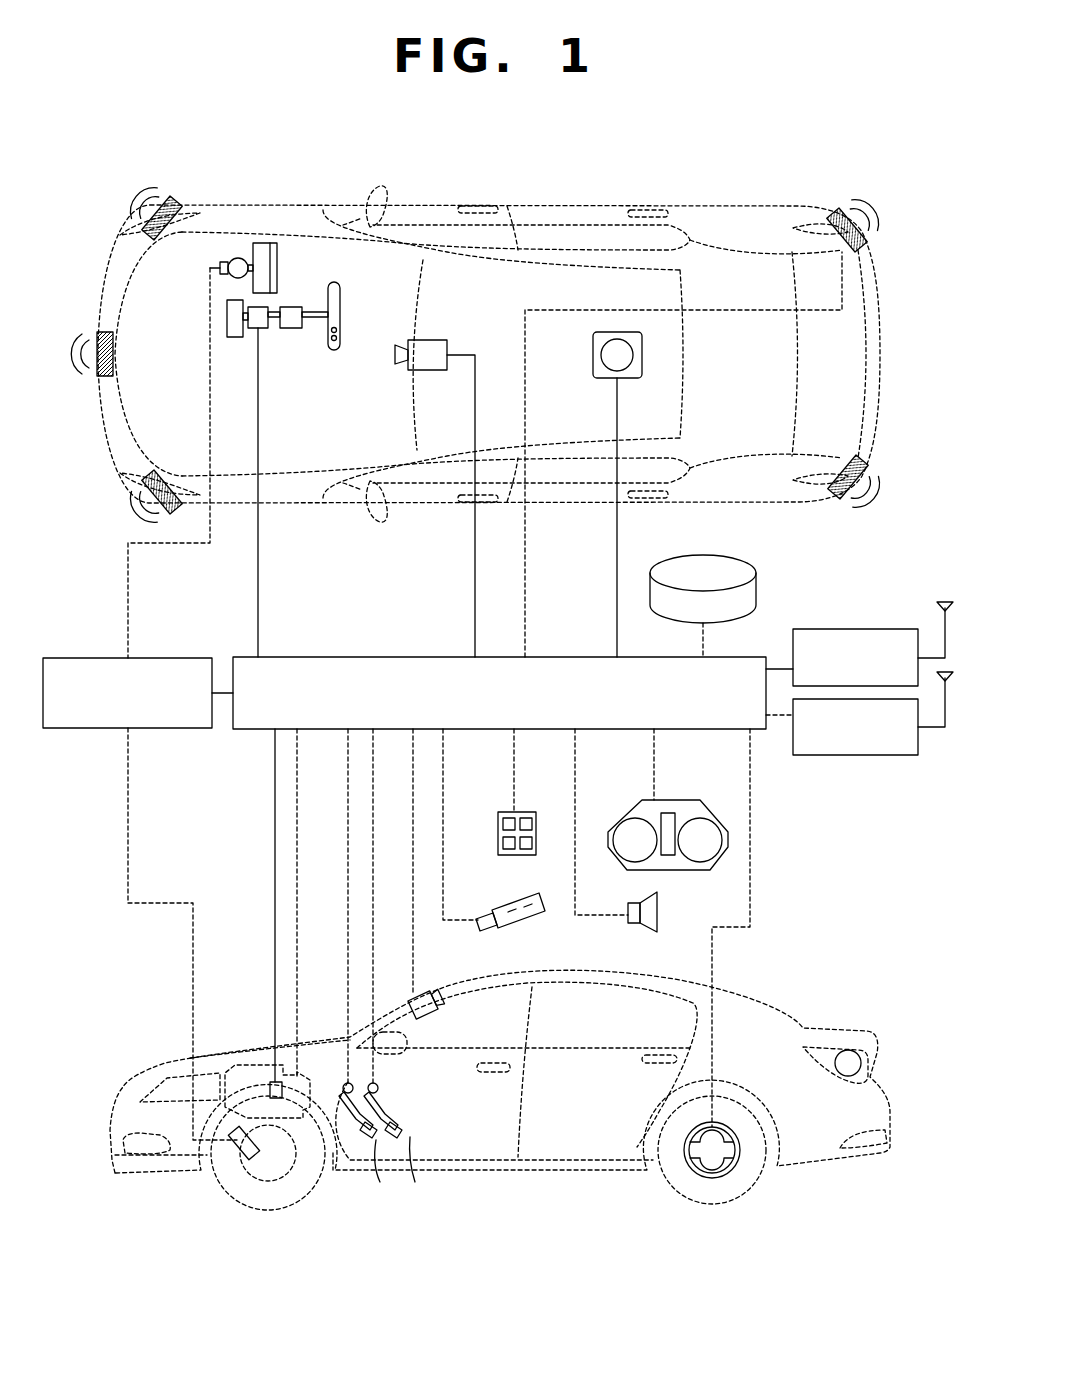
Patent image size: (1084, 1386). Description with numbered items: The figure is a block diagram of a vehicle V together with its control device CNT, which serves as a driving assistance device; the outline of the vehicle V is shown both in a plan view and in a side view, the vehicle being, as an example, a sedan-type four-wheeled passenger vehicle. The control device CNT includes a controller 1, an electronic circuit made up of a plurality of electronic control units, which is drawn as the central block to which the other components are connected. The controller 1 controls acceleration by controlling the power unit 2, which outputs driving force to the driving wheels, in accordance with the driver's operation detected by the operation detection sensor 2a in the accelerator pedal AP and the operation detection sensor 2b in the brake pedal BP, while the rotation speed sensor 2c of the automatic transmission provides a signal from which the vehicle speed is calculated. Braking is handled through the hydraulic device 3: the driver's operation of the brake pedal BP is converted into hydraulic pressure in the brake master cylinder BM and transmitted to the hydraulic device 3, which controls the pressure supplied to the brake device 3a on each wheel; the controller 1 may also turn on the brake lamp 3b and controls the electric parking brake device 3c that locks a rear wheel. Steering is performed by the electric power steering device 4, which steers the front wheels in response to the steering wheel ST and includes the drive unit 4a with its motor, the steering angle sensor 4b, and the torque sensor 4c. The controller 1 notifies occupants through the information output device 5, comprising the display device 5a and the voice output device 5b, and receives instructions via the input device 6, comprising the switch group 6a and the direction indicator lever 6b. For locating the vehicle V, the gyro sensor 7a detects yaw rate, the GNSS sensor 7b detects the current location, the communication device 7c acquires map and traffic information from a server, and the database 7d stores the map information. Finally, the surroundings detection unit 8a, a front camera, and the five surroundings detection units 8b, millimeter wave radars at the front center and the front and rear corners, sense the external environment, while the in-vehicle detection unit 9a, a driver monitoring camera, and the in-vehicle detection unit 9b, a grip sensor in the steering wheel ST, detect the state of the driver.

The controller 1 is at (432, 657).
The power unit 2 is at (300, 1113).
The operation detection sensor 2a is at (348, 1083).
The operation detection sensor 2b is at (380, 1088).
The rotation speed sensor 2c is at (271, 1082).
The hydraulic device 3 is at (97, 657).
The brake device 3a is at (238, 1158).
The brake lamp 3b is at (849, 1050).
The electric parking brake device 3c is at (700, 1178).
The electric power steering device 4 is at (280, 414).
The drive unit 4a is at (268, 328).
The steering angle sensor 4b is at (226, 303).
The torque sensor 4c is at (298, 303).
The information output device 5 is at (658, 836).
The display device 5a is at (626, 817).
The voice output device 5b is at (628, 912).
The input device 6 is at (504, 837).
The switch group 6a is at (498, 822).
The direction indicator lever 6b is at (492, 912).
The gyro sensor 7a is at (600, 378).
The GNSS sensor 7b is at (843, 628).
The communication device 7c is at (893, 755).
The database 7d is at (757, 582).
The surroundings detection unit 8a is at (428, 340).
The surroundings detection unit 8b is at (176, 205).
The in-vehicle detection unit 9a is at (434, 992).
The in-vehicle detection unit 9b is at (341, 327).
The accelerator pedal AP is at (382, 1175).
The brake pedal BP is at (427, 1174).
The brake master cylinder BM is at (242, 256).
The steering wheel ST is at (341, 288).
The control device CNT is at (593, 656).
The vehicle V is at (895, 258).